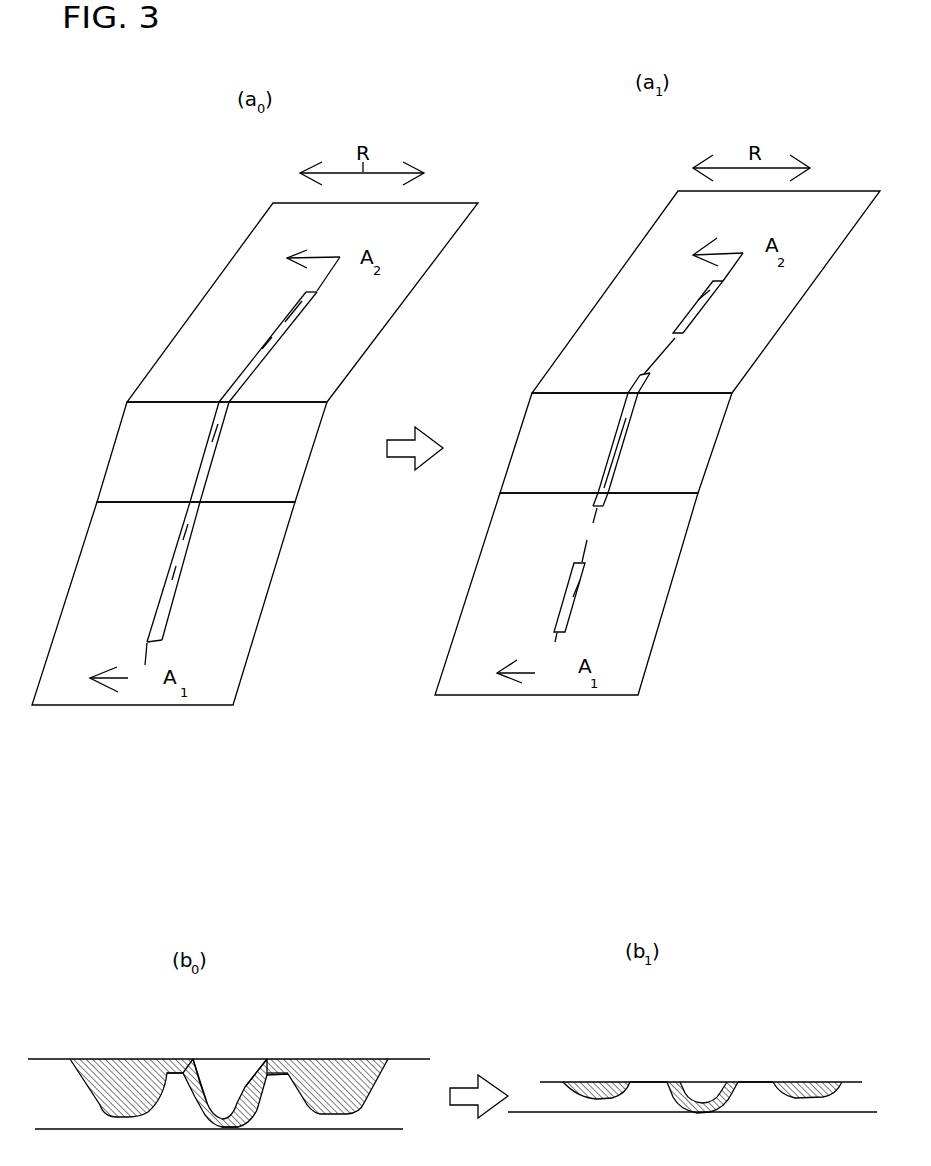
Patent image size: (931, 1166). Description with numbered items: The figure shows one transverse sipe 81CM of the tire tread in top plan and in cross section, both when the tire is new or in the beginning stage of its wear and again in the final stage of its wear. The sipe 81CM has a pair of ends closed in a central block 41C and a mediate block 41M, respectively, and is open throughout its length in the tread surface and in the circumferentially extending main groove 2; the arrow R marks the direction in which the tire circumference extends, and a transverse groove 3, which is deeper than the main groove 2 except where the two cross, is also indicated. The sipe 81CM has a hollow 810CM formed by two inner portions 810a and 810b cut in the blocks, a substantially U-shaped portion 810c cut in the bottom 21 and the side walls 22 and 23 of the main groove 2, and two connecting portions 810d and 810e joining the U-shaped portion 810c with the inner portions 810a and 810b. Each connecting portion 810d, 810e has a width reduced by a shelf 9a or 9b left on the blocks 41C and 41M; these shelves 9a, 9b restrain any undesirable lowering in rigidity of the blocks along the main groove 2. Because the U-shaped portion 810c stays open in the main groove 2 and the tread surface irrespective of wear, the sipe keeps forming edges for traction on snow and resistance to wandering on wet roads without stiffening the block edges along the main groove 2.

The mediate block 41M is at (432, 228).
The central block 41C is at (233, 647).
The main groove 2 is at (292, 477).
The transverse groove 3 is at (408, 352).
The inner portion 810a is at (180, 578).
The inner portion 810b is at (258, 348).
The substantially U-shaped portion 810c is at (212, 472).
The connecting portion 810d is at (173, 1062).
The connecting portion 810e is at (277, 1060).
The hollow 810CM is at (288, 317).
The transverse sipe 81CM is at (615, 477).
The shelf 9a is at (595, 522).
The shelf 9b is at (663, 355).
The bottom 21 is at (228, 1115).
The side wall 22 is at (200, 1073).
The side wall 23 is at (255, 1087).